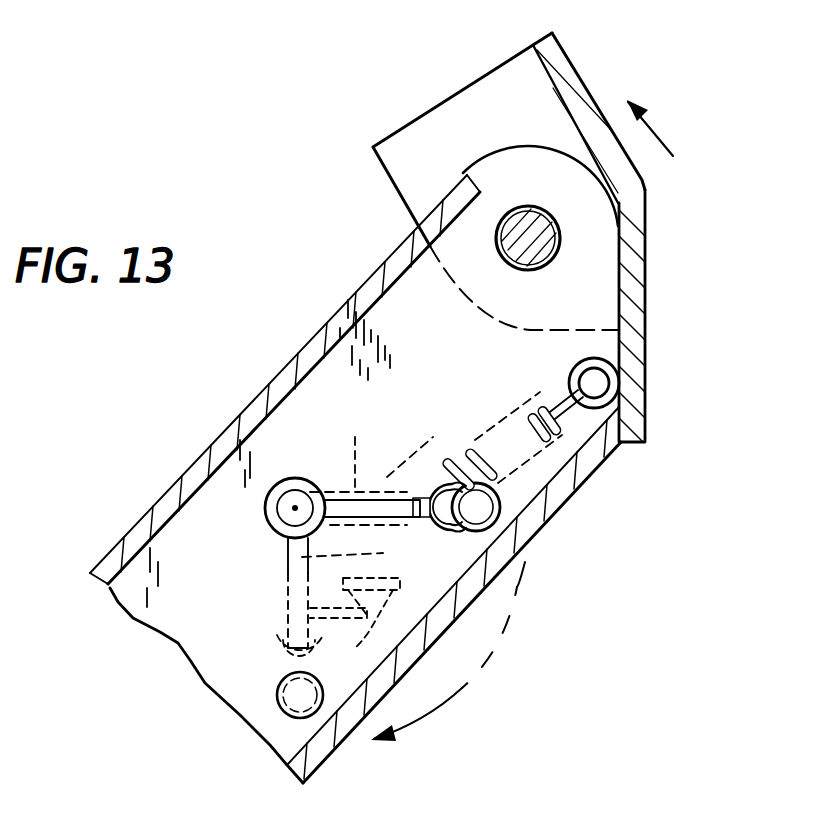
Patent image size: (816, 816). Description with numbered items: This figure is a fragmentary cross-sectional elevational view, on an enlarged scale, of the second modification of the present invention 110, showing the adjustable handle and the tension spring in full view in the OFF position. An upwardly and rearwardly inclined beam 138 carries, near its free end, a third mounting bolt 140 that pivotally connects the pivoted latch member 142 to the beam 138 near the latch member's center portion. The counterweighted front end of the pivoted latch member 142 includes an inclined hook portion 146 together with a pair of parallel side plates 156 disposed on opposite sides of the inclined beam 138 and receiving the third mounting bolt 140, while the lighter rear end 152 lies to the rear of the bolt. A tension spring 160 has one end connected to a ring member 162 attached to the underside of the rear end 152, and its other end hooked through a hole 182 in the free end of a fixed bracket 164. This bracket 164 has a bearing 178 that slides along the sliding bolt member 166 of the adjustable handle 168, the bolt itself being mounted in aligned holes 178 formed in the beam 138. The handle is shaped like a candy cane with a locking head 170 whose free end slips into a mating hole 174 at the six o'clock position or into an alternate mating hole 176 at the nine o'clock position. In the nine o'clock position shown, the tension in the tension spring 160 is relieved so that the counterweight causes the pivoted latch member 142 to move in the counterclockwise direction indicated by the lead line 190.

The second modification of the present invention 110 is at (312, 320).
The inclined beam 138 is at (393, 250).
The third mounting bolt 140 is at (548, 240).
The pivoted latch member 142 is at (507, 72).
The inclined hook portion 146 is at (640, 176).
The rear end 152 is at (648, 408).
The parallel side plates 156 is at (405, 175).
The tension spring 160 is at (573, 492).
The ring member 162 is at (608, 362).
The fixed bracket 164 is at (358, 513).
The sliding bolt member 166 is at (290, 503).
The adjustable handle 168 is at (296, 500).
The locking head 170 is at (355, 448).
The mating hole 174 is at (300, 698).
The alternate mating hole 176 is at (480, 510).
The aligned holes 178 is at (265, 512).
The hole 182 is at (441, 469).
The lead line 190 is at (658, 132).